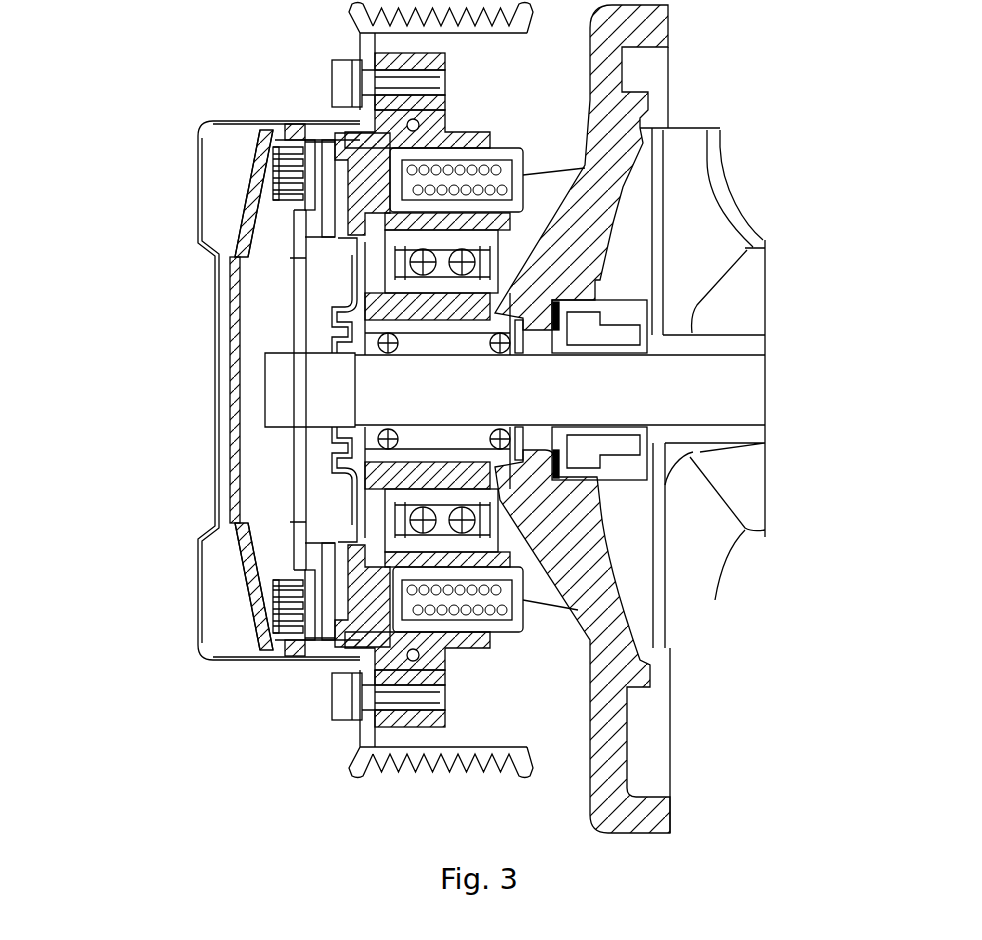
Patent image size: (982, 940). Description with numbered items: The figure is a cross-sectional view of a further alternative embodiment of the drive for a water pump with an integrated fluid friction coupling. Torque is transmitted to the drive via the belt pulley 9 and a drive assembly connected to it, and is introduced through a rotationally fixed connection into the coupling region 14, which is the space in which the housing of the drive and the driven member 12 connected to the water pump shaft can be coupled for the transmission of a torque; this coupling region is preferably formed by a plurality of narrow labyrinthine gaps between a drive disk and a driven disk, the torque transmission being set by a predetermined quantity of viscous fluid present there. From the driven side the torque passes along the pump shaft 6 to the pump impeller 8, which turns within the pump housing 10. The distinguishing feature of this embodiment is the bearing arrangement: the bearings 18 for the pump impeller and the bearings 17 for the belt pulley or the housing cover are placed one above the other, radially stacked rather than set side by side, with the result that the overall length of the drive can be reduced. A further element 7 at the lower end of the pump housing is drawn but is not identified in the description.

The pump shaft 6 is at (718, 400).
The flange 7 is at (610, 829).
The pump impeller 8 is at (748, 263).
The belt pulley 9 is at (362, 33).
The pump housing 10 is at (610, 107).
The driven member 12 is at (295, 283).
The coupling region 14 is at (277, 172).
The bearings for the belt pulley 17 is at (447, 490).
The bearings for the pump impeller 18 is at (377, 453).